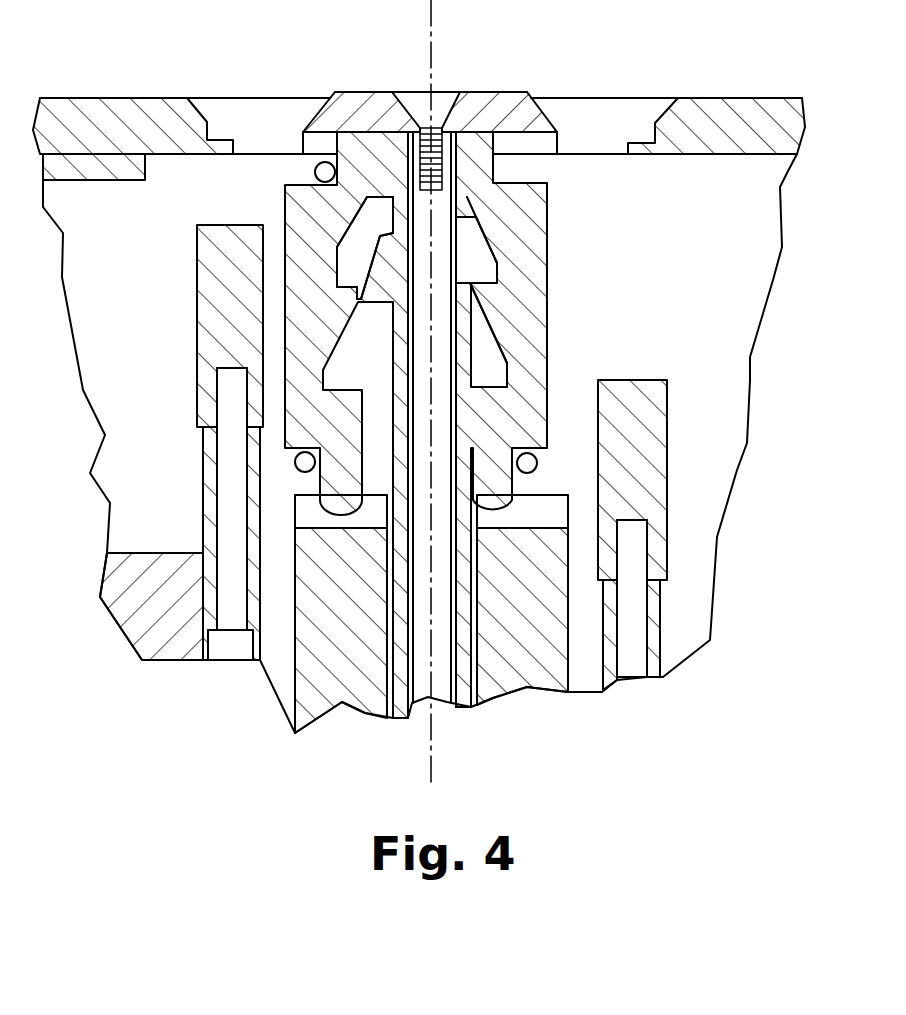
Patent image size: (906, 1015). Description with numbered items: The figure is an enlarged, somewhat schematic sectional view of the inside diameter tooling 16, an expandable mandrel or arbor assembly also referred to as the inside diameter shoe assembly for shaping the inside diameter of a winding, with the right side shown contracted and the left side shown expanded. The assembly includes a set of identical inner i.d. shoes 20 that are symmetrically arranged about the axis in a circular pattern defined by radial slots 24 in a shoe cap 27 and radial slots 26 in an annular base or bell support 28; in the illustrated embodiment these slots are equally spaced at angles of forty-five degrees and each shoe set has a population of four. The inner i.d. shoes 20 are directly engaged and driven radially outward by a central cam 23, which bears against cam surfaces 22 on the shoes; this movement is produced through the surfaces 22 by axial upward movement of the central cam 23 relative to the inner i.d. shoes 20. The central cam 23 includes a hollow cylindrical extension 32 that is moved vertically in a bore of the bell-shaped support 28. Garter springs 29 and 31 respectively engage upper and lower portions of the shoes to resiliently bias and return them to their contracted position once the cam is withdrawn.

The inside diameter tooling 16 is at (492, 425).
The inner i.d. shoes 20 is at (548, 223).
The cam surfaces 22 is at (337, 305).
The central cam 23 is at (478, 343).
The radial slots 24 is at (527, 140).
The radial slots 26 is at (548, 508).
The shoe cap 27 is at (492, 97).
The annular base or bell support 28 is at (533, 670).
The garter spring 29 is at (315, 171).
The garter spring 31 is at (296, 467).
The hollow cylindrical extension 32 is at (400, 655).